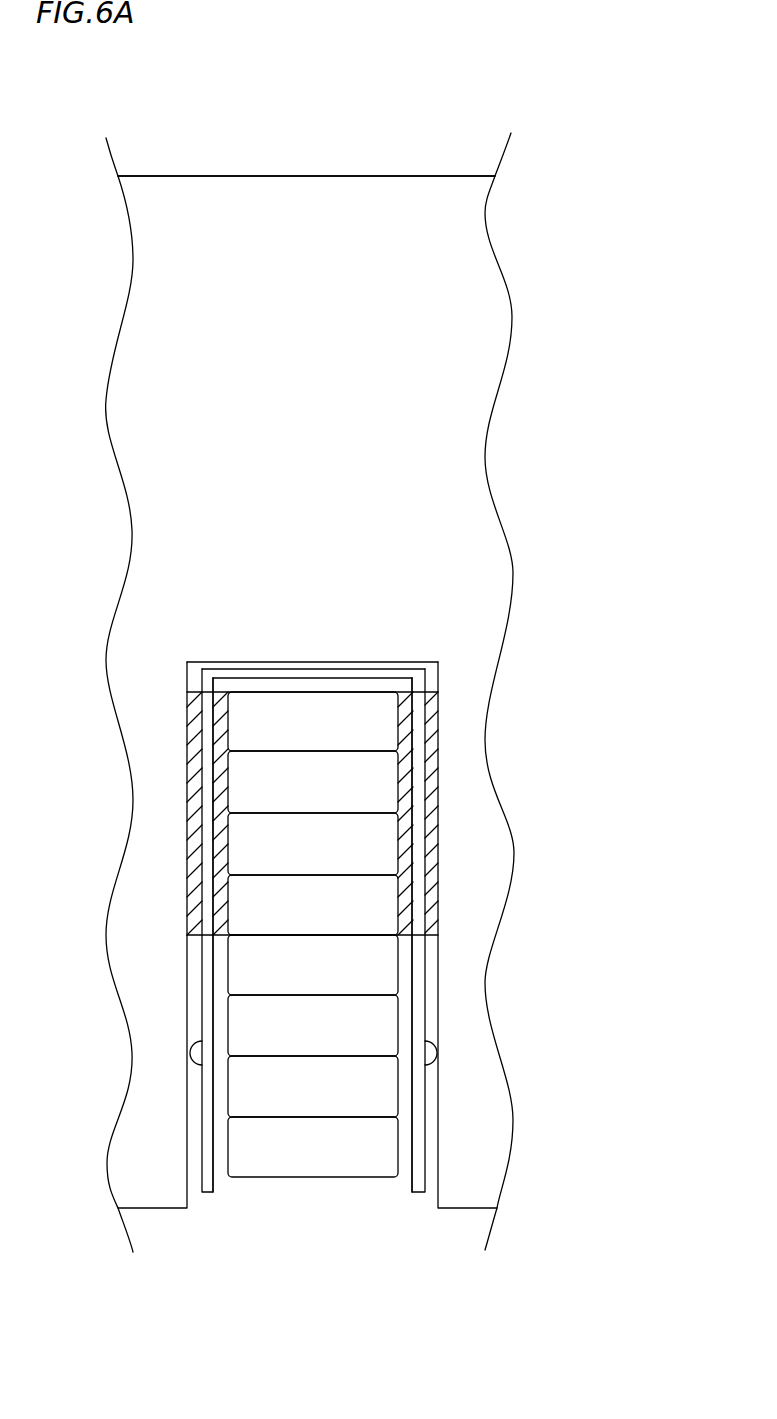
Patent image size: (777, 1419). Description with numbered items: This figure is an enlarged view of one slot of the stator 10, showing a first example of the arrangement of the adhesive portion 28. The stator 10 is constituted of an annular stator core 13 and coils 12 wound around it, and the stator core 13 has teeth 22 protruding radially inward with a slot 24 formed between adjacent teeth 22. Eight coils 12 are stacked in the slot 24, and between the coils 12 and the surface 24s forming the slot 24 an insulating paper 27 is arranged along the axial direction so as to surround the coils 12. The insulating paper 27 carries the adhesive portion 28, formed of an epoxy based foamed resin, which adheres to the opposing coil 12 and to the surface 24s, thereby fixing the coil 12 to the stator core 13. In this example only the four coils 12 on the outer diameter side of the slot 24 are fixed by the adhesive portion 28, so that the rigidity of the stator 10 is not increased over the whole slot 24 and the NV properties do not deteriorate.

The stator 10 is at (195, 176).
The coil 12 is at (327, 692).
The stator core 13 is at (331, 228).
The tooth 22 is at (153, 1183).
The slot 24 is at (317, 1190).
The surface forming the slot 24s is at (190, 1064).
The insulating paper 27 is at (207, 1195).
The adhesive portion 28 is at (190, 708).